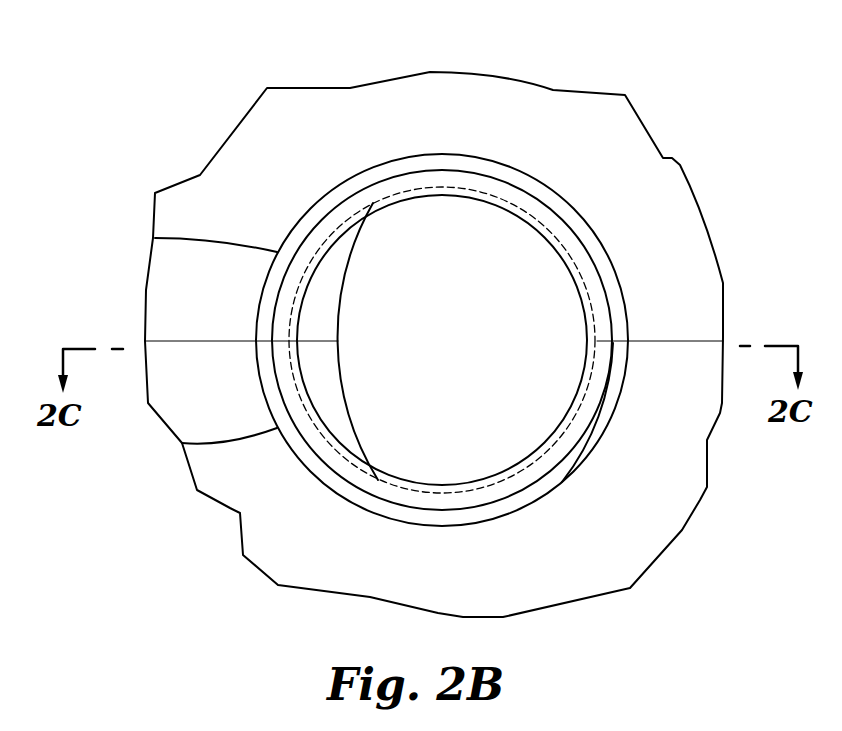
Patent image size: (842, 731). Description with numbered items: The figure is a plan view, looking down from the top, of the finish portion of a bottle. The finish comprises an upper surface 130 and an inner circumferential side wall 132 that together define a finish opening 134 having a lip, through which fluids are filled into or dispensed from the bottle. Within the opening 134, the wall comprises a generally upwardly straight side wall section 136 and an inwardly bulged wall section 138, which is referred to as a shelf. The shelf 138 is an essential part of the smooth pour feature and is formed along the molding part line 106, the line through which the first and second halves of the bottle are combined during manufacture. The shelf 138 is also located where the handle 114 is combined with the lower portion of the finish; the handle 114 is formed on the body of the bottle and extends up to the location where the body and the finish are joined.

The molding part line 106 is at (198, 341).
The handle 114 is at (223, 442).
The upper surface 130 is at (570, 242).
The inner circumferential side wall 132 is at (552, 274).
The finish opening 134 is at (401, 224).
The upwardly straight side wall section 136 is at (455, 192).
The inwardly bulged wall section 138 is at (323, 299).